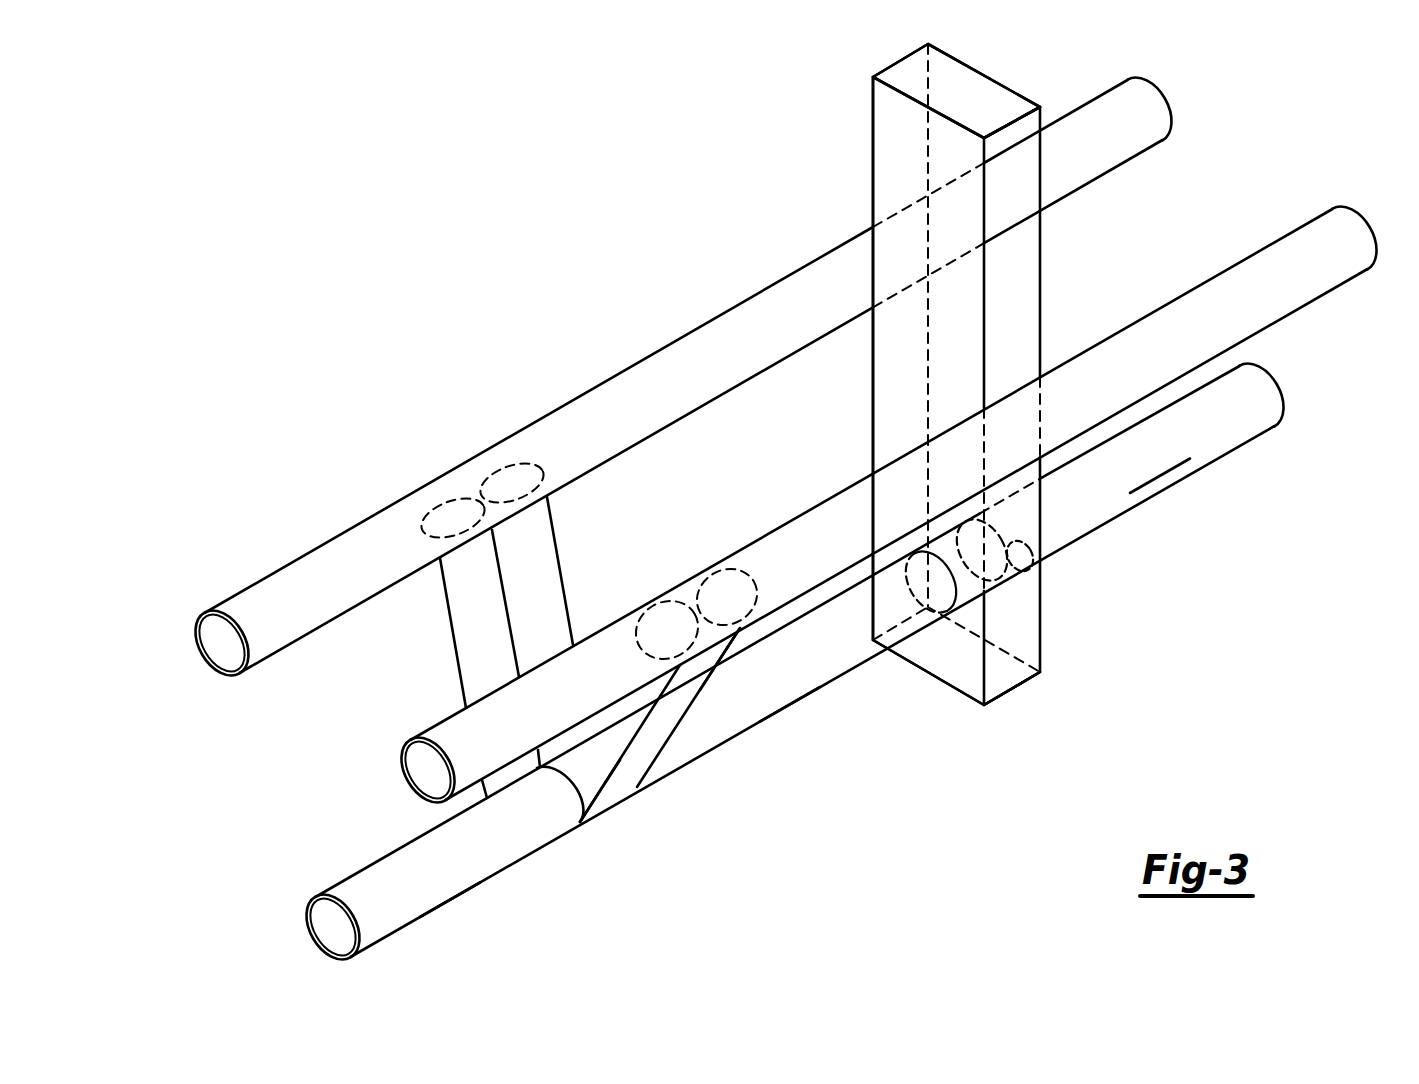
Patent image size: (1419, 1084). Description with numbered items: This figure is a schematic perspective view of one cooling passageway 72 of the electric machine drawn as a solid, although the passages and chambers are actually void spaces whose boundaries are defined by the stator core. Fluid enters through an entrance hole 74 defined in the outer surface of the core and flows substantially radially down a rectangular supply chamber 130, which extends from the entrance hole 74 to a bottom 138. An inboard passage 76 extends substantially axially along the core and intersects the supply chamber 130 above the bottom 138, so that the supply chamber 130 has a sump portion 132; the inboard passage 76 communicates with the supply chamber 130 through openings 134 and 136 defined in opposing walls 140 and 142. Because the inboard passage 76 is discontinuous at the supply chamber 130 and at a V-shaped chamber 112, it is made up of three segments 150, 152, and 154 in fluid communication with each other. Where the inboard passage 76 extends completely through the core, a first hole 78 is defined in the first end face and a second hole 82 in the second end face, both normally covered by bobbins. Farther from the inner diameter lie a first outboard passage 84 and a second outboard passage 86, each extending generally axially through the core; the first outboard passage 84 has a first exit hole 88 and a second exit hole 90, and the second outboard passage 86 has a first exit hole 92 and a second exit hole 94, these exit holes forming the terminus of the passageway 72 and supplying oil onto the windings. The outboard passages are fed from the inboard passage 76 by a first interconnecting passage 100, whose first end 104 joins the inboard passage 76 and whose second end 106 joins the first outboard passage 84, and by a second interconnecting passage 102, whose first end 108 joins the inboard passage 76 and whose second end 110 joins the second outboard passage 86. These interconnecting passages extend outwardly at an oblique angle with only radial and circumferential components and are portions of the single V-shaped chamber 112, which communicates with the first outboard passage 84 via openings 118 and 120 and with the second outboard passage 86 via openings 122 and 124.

The passageway 72 is at (1306, 110).
The entrance hole 74 is at (993, 80).
The inboard passage 76 is at (1210, 440).
The first hole 78 is at (312, 925).
The second hole 82 is at (1270, 388).
The first outboard passage 84 is at (1245, 275).
The second outboard passage 86 is at (650, 372).
The first exit hole 88 is at (402, 793).
The second exit hole 90 is at (1365, 228).
The first exit hole 92 is at (200, 660).
The second exit hole 94 is at (1160, 108).
The first interconnecting passage 100 is at (646, 752).
The second interconnecting passage 102 is at (557, 564).
The first end 104 is at (615, 806).
The second end 106 is at (717, 643).
The first end 108 is at (540, 767).
The second end 110 is at (492, 530).
The V-shaped chamber 112 is at (470, 652).
The opening 118 is at (720, 568).
The opening 120 is at (648, 604).
The opening 122 is at (497, 472).
The opening 124 is at (442, 502).
The supply chamber 130 is at (886, 138).
The sump portion 132 is at (996, 680).
The opening 134 is at (893, 600).
The opening 136 is at (1040, 560).
The bottom 138 is at (1020, 685).
The wall 140 is at (882, 397).
The wall 142 is at (1025, 97).
The segment 150 is at (447, 885).
The segment 152 is at (788, 683).
The segment 154 is at (1160, 470).